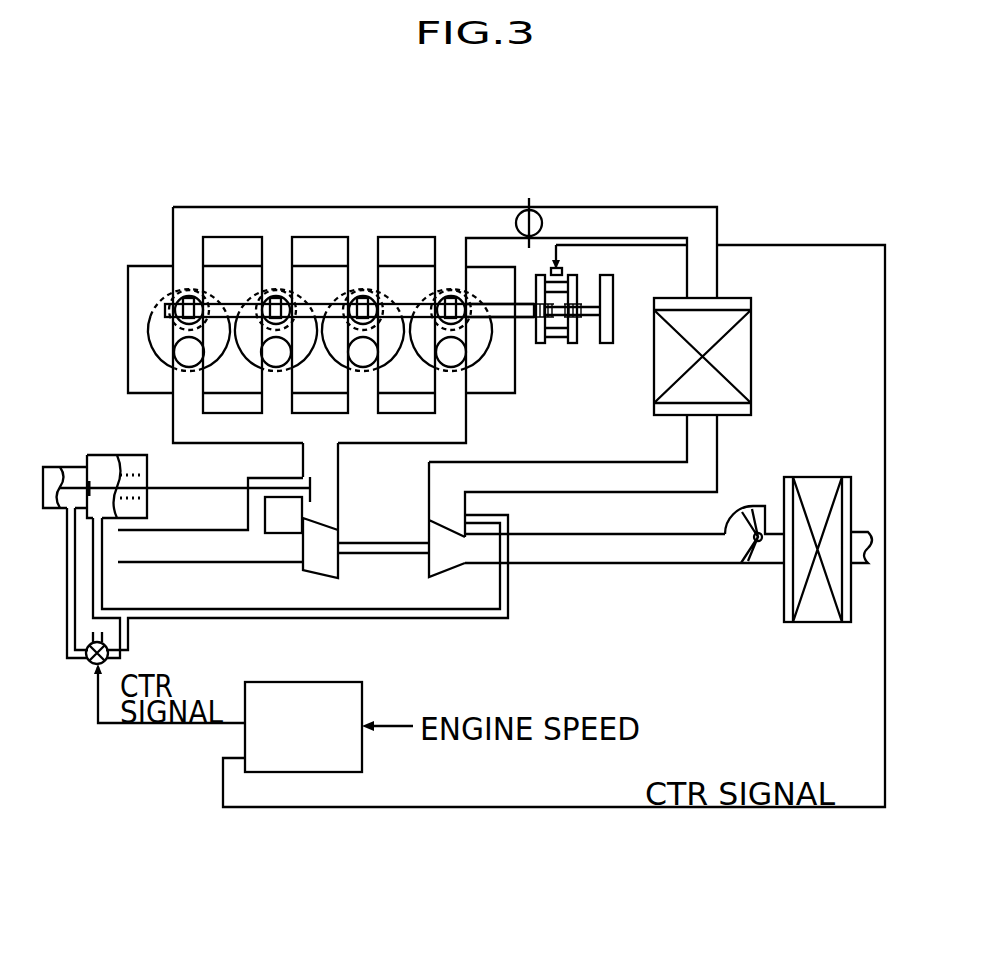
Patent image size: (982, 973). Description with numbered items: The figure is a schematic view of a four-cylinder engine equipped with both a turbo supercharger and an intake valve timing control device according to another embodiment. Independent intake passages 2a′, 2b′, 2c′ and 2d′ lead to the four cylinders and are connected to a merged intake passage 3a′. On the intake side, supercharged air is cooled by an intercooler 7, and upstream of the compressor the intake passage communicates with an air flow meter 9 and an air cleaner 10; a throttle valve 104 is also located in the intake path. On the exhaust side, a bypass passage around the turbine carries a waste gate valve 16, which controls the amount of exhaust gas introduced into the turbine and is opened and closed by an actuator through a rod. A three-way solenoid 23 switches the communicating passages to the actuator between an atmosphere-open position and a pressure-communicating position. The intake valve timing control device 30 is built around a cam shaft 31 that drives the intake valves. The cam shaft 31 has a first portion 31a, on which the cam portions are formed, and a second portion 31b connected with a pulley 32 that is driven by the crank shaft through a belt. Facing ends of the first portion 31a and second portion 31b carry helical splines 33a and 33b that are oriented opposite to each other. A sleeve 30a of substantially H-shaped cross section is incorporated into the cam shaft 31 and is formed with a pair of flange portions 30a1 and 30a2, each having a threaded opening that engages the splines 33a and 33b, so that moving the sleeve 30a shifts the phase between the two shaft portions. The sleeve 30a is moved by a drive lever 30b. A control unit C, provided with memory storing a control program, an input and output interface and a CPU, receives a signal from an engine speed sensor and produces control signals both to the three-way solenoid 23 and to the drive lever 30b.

The independent intake passage 2a′ is at (188, 258).
The independent intake passage 2b′ is at (277, 255).
The independent intake passage 2c′ is at (362, 257).
The independent intake passage 2d′ is at (452, 255).
The merged intake passage 3a′ is at (337, 222).
The cam shaft 31 is at (412, 297).
The first portion 31a is at (497, 302).
The second portion 31b is at (590, 328).
The pulley 32 is at (607, 292).
The throttle valve 104 is at (542, 267).
The intake valve timing control device 30 is at (606, 305).
The sleeve 30a is at (562, 272).
The drive lever 30b is at (578, 300).
The flange portion 30a1 is at (537, 333).
The flange portion 30a2 is at (573, 335).
The helical spline 33a is at (515, 317).
The helical spline 33b is at (695, 245).
The intercooler 7 is at (745, 358).
The air flow meter 9 is at (757, 545).
The air cleaner 10 is at (822, 486).
The waste gate valve 16 is at (317, 490).
The three-way solenoid 23 is at (92, 660).
The control unit C is at (294, 681).